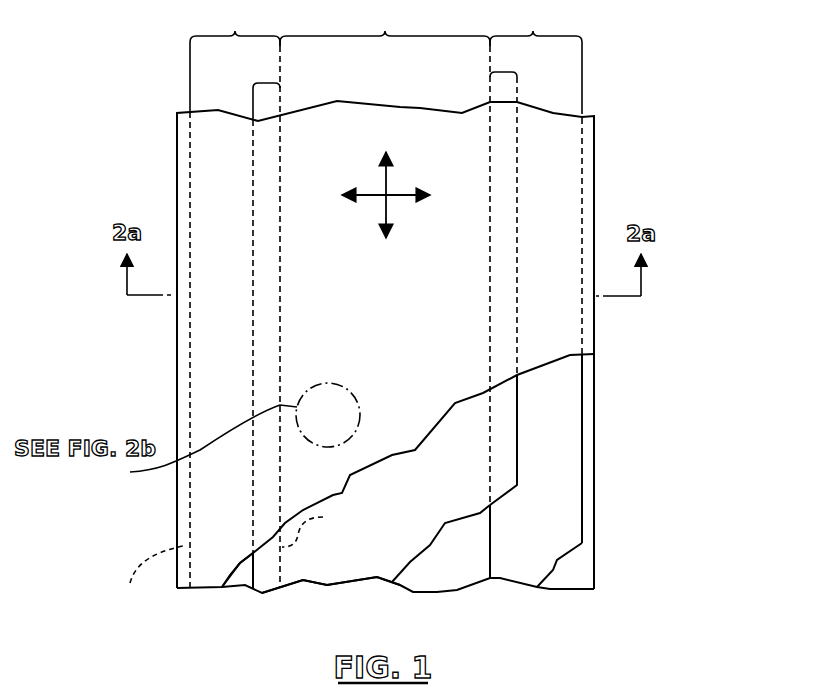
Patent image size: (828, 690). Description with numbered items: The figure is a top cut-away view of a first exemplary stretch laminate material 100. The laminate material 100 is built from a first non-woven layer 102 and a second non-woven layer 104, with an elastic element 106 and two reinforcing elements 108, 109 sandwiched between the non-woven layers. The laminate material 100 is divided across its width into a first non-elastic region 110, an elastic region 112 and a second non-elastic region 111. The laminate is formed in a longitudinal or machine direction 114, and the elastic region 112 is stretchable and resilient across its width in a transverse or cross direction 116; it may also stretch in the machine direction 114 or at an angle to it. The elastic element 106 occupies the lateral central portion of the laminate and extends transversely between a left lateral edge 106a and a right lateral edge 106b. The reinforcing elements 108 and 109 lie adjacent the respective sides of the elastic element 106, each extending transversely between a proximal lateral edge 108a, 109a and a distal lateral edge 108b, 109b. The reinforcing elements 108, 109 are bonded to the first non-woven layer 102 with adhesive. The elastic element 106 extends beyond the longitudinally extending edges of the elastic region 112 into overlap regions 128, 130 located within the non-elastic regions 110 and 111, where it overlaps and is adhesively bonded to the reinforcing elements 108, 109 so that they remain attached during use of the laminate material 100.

The stretch laminate material 100 is at (645, 92).
The first non-woven layer 102 is at (567, 575).
The second non-woven layer 104 is at (388, 428).
The elastic element 106 is at (328, 560).
The left lateral edge 106a is at (252, 573).
The right lateral edge 106b is at (518, 430).
The reinforcing element 108 is at (237, 570).
The proximal lateral edge 108a is at (331, 526).
The distal lateral edge 108b is at (135, 578).
The reinforcing element 109 is at (522, 568).
The proximal lateral edge 109a is at (488, 535).
The distal lateral edge 109b is at (582, 474).
The first non-elastic region 110 is at (235, 296).
The second non-elastic region 111 is at (536, 255).
The elastic region 112 is at (385, 296).
The longitudinal direction 114 is at (386, 172).
The transverse direction 116 is at (367, 196).
The overlap region 128 is at (267, 82).
The overlap region 130 is at (505, 72).